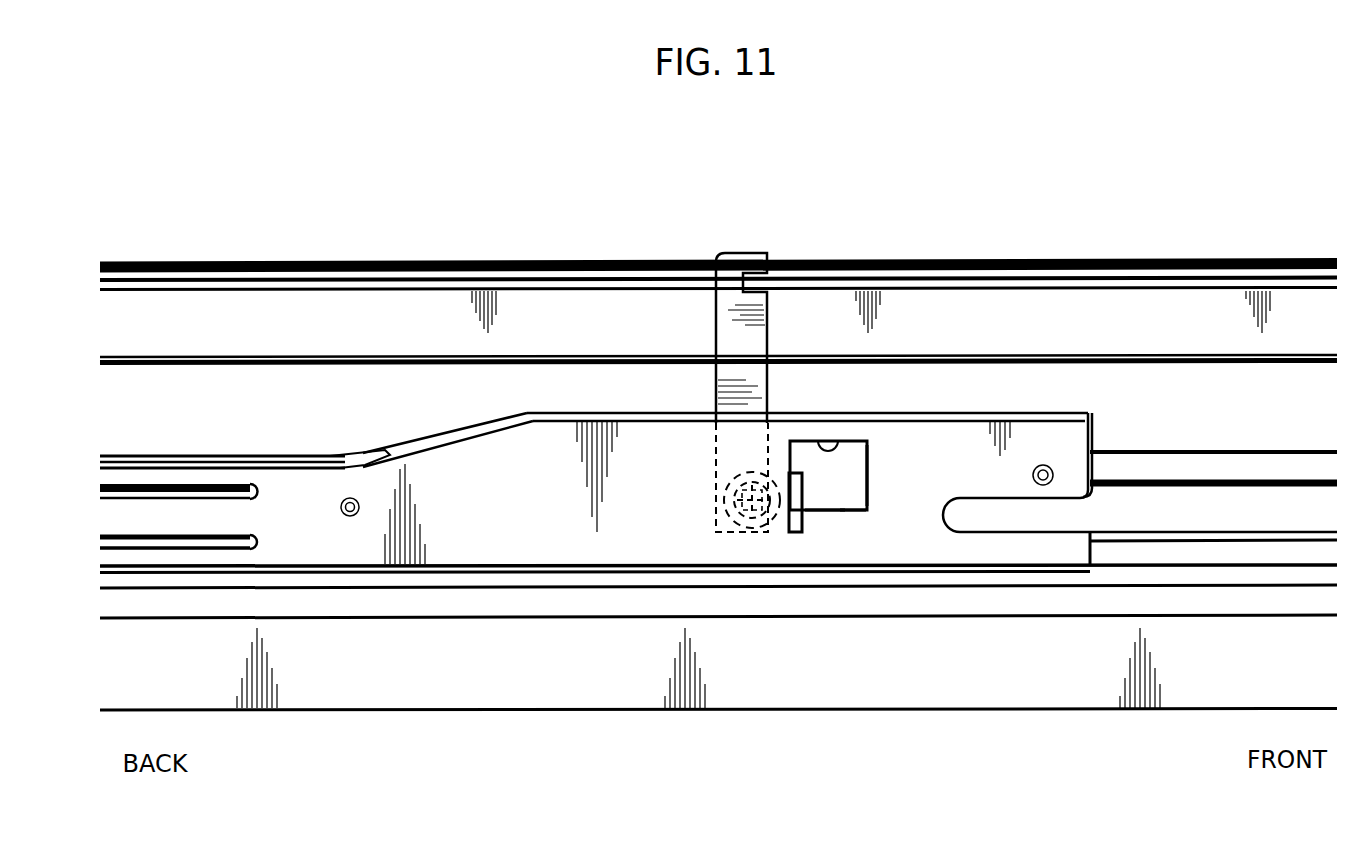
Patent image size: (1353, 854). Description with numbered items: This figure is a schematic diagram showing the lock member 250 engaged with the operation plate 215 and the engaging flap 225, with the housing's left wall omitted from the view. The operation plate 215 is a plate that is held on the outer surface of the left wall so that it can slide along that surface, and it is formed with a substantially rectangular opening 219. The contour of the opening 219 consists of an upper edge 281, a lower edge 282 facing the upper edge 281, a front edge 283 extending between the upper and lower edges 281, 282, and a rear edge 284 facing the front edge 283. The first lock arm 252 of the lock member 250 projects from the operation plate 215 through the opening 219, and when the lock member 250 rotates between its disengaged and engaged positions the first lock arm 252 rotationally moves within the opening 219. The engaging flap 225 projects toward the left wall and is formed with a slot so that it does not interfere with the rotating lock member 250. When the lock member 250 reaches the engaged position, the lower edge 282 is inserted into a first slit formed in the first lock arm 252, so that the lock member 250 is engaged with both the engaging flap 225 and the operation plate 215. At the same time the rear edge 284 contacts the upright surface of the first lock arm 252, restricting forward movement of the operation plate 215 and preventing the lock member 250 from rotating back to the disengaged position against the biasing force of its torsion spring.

The operation plate 215 is at (558, 540).
The opening 219 is at (848, 511).
The engaging flap 225 is at (983, 287).
The lock member 250 is at (765, 327).
The first lock arm 252 is at (797, 533).
The upper edge 281 is at (841, 441).
The lower edge 282 is at (833, 511).
The front edge 283 is at (867, 479).
The rear edge 284 is at (790, 456).